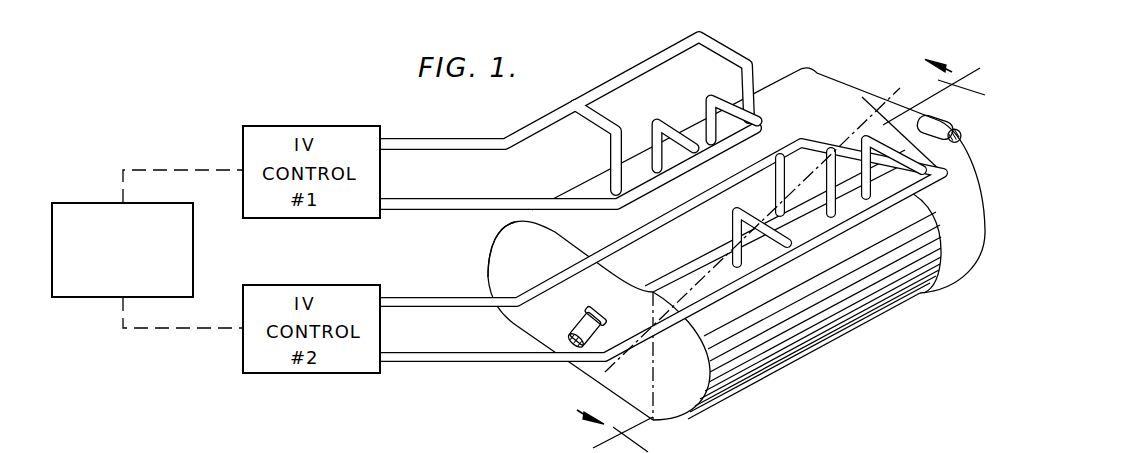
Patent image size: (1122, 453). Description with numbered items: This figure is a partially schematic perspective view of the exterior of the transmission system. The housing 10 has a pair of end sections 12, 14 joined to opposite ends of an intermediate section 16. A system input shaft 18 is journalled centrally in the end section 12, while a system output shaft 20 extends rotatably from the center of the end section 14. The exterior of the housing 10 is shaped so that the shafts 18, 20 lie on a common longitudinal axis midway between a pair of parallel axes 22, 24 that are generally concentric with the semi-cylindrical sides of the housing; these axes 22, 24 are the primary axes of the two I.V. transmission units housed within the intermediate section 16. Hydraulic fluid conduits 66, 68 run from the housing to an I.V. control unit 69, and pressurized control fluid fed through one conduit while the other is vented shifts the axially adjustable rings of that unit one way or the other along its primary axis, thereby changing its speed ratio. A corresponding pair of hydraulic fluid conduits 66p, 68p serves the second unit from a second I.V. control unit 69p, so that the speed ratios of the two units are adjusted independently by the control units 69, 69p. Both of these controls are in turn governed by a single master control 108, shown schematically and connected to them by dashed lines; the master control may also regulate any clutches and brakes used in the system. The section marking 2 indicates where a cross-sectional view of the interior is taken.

The housing 10 is at (682, 235).
The end section 12 is at (718, 388).
The end section 14 is at (965, 239).
The intermediate section 16 is at (832, 325).
The input shaft 18 is at (578, 325).
The output shaft 20 is at (958, 132).
The primary axis 22 is at (590, 396).
The primary axis 24 is at (515, 312).
The hydraulic fluid conduit 66 is at (732, 238).
The hydraulic fluid conduit 66p is at (611, 155).
The hydraulic fluid conduit 68 is at (826, 196).
The hydraulic fluid conduit 68p is at (712, 103).
The I.V. control unit 69 is at (332, 290).
The I.V. control unit 69p is at (365, 128).
The master control 108 is at (104, 206).
The section line 2- 2 is at (773, 54).